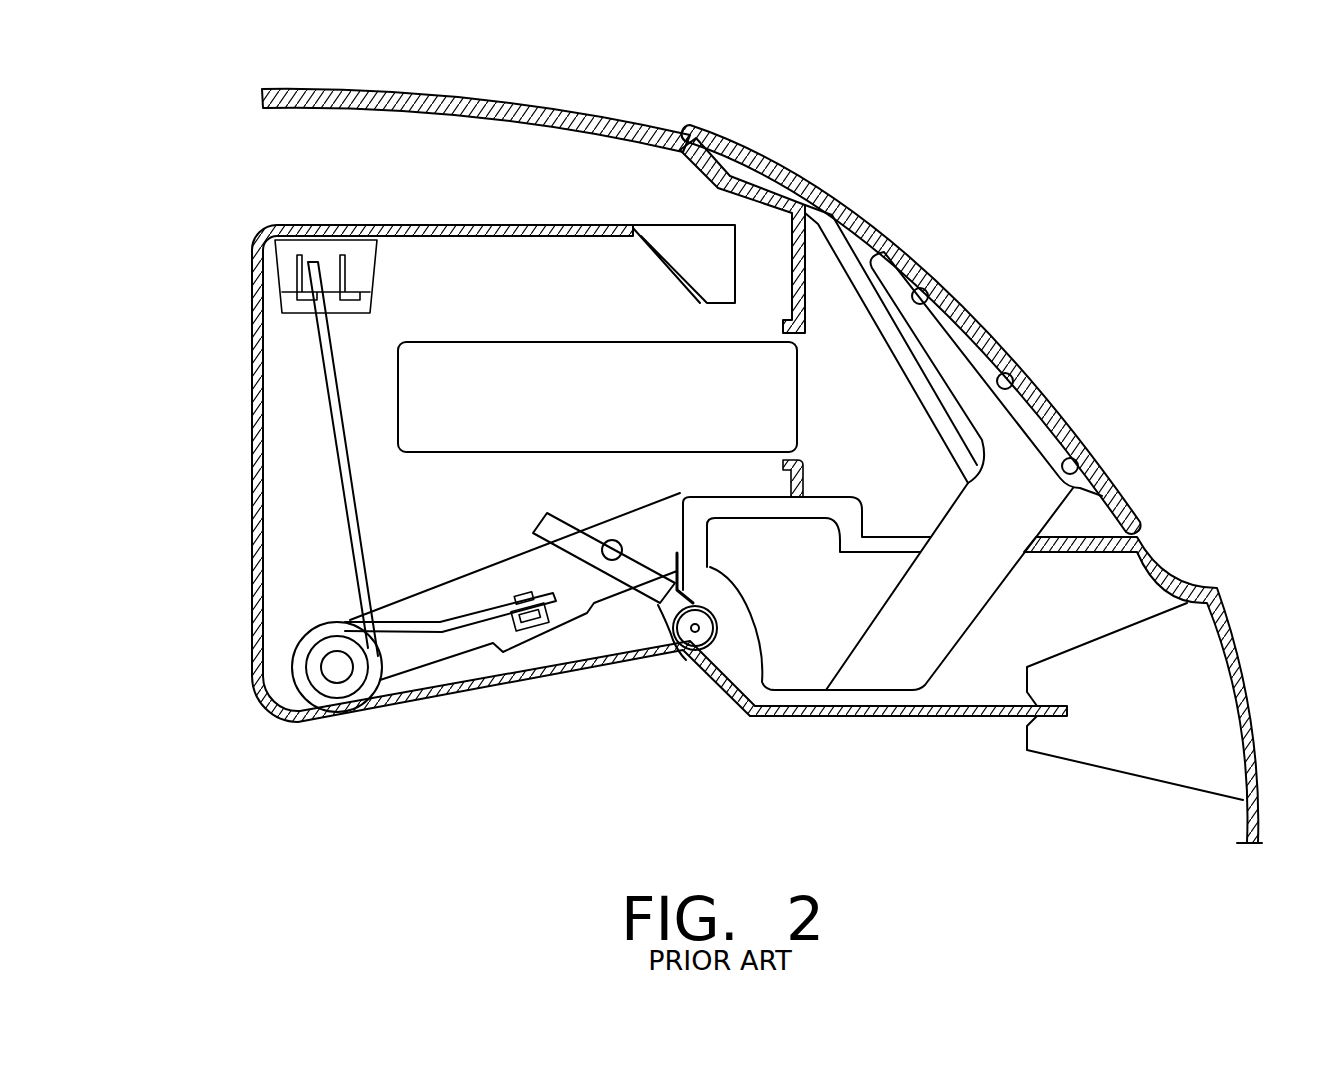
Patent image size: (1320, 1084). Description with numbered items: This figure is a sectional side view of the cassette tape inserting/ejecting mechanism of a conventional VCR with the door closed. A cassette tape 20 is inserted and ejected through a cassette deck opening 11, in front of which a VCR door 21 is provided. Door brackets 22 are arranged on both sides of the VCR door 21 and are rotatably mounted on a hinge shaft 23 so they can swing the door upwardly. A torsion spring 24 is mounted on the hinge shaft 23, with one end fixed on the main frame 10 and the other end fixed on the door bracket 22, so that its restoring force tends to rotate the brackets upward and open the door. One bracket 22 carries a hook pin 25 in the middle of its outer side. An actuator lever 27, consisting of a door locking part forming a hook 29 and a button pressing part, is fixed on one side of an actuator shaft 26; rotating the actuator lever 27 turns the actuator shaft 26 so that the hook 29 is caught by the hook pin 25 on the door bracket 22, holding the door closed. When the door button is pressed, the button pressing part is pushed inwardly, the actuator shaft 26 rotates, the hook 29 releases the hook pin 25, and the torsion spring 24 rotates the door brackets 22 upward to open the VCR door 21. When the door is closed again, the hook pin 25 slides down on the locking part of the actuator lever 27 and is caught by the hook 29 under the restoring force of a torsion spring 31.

The main frame 10 is at (1243, 656).
The cassette deck opening 11 is at (798, 338).
The cassette tape 20 is at (557, 357).
The VCR door 21 is at (978, 316).
The door bracket 22 is at (573, 605).
The hinge shaft 23 is at (332, 668).
The torsion spring 24 is at (440, 630).
The hook pin 25 is at (613, 543).
The actuator shaft 26 is at (695, 632).
The actuator lever 27 is at (703, 507).
The hook 29 is at (574, 530).
The torsion spring 31 is at (658, 640).